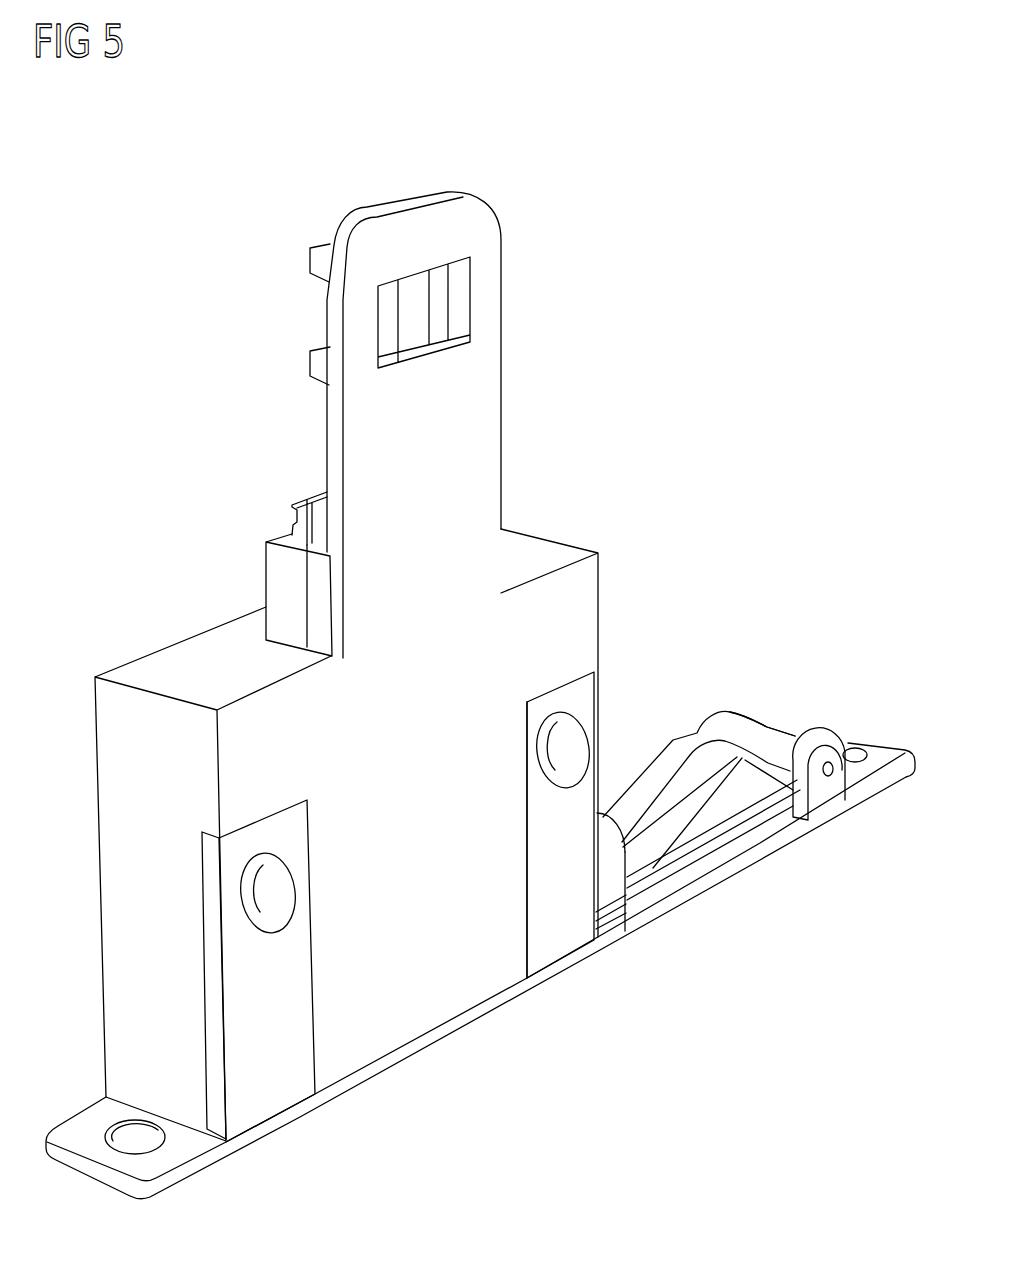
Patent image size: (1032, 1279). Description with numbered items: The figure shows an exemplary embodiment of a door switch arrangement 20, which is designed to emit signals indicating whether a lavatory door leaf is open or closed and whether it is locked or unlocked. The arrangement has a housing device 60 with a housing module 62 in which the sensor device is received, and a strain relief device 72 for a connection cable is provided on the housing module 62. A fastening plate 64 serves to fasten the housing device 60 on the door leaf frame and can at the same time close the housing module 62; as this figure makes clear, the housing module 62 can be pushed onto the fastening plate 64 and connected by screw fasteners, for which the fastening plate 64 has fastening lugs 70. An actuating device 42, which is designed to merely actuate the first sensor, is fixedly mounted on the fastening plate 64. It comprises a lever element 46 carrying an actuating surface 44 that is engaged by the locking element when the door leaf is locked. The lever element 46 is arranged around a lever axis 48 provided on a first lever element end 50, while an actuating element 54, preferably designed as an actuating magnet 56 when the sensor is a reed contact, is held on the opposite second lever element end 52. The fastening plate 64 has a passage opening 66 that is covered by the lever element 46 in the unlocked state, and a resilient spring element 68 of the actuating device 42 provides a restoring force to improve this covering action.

The door switch arrangement 20 is at (143, 197).
The strain relief device 72 is at (337, 220).
The housing device 60 is at (142, 632).
The housing module 62 is at (123, 753).
The actuating device 42 is at (678, 582).
The fastening plate 64 is at (583, 690).
The fastening lugs 70 is at (540, 905).
The actuating surface 44 is at (713, 920).
The passage opening 66 is at (760, 902).
The first lever element end 50 is at (848, 662).
The lever element 46 is at (693, 737).
The resilient spring element 68 is at (792, 712).
The second lever element end 52 is at (613, 793).
The actuating element 54 is at (612, 883).
The actuating magnet 56 is at (603, 895).
The lever axis 48 is at (828, 777).